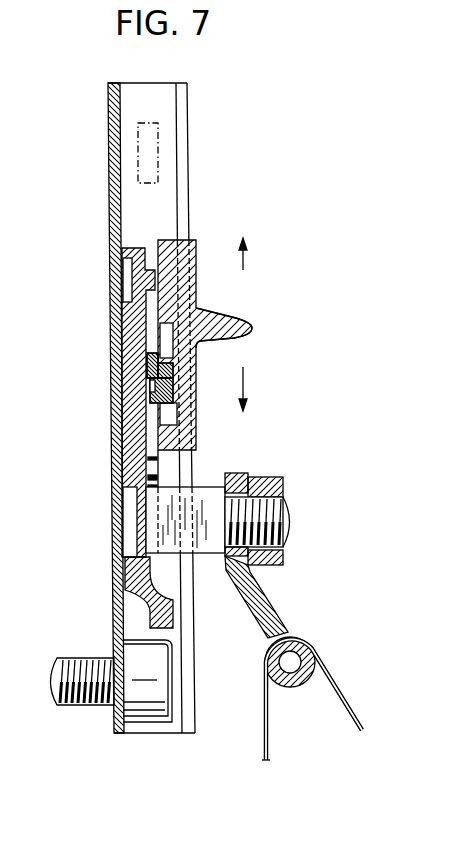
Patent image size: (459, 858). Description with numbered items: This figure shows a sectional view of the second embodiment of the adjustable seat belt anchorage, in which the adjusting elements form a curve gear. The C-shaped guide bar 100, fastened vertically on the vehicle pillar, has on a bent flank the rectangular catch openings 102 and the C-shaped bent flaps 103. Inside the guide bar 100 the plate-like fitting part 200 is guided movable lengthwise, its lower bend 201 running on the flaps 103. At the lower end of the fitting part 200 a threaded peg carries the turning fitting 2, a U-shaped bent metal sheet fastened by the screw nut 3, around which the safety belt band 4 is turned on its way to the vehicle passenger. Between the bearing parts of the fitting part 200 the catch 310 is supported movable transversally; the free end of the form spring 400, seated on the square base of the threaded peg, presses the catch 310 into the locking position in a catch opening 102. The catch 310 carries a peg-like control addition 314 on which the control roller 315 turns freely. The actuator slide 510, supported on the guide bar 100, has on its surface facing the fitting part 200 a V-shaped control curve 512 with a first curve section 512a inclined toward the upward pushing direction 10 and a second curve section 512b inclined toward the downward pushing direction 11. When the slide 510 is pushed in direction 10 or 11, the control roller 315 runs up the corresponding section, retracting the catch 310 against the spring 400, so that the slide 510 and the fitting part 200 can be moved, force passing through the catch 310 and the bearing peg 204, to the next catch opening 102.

The guide bar 100 is at (95, 130).
The flaps 103 is at (183, 113).
The catch openings 102 is at (158, 156).
The actuator slide 510 is at (196, 252).
The control curve 512 is at (240, 306).
The first curve section 512a is at (170, 336).
The second curve section 512b is at (168, 412).
The catch 310 is at (150, 372).
The control roller 315 is at (176, 370).
The control addition 314 is at (176, 392).
The fitting part 200 is at (123, 308).
The bend 201 is at (168, 608).
The bearing peg 204 is at (205, 497).
The form spring 400 is at (150, 443).
The pushing direction 10 is at (244, 268).
The pushing direction 11 is at (244, 378).
The screw nut 3 is at (270, 474).
The turning fitting 2 is at (277, 610).
The safety belt band 4 is at (263, 740).